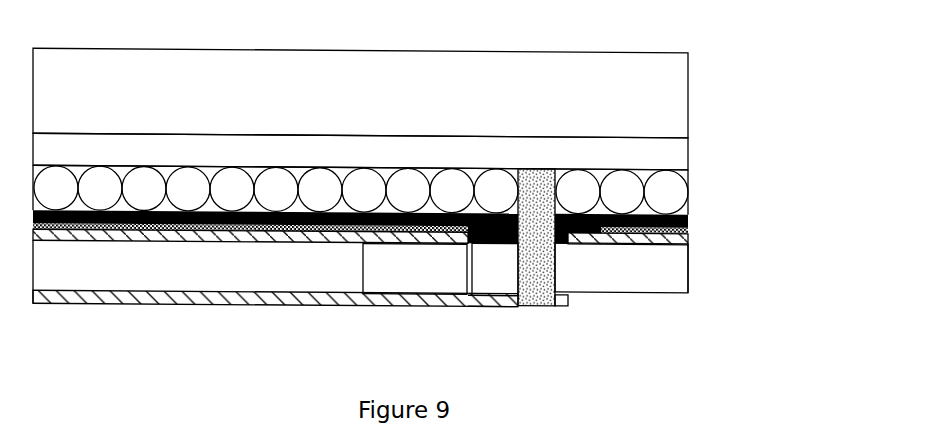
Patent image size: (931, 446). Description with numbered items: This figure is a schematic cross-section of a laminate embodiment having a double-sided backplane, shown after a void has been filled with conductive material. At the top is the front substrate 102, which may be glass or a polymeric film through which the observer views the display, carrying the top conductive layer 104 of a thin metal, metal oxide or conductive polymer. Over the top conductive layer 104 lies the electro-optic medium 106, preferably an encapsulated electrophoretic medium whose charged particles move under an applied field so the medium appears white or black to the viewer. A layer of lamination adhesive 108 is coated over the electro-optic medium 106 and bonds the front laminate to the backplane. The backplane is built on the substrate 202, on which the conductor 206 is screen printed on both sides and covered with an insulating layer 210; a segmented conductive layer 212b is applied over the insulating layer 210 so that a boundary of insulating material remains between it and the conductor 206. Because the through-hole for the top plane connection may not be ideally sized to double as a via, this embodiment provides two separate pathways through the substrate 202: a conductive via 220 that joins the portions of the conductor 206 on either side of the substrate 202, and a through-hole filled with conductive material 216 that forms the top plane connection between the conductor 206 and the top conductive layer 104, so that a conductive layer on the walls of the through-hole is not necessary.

The substrate 102 is at (376, 96).
The top conductive layer 104 is at (373, 162).
The electro-optic medium 106 is at (687, 175).
The lamination adhesive 108 is at (687, 217).
The segmented conductive layer 212b is at (687, 228).
The insulating layer 210 is at (687, 241).
The substrate 202 is at (687, 292).
The conductive via 220 is at (467, 272).
The conductor 206 is at (495, 303).
The conductive material 216 is at (542, 303).